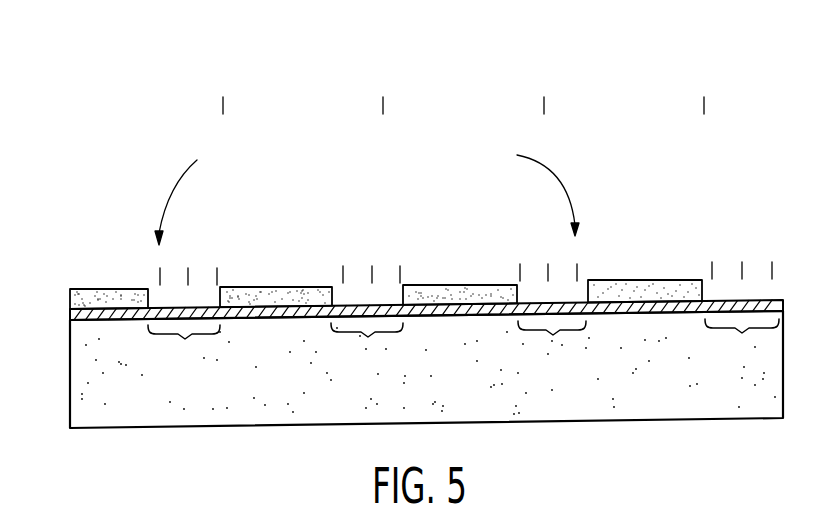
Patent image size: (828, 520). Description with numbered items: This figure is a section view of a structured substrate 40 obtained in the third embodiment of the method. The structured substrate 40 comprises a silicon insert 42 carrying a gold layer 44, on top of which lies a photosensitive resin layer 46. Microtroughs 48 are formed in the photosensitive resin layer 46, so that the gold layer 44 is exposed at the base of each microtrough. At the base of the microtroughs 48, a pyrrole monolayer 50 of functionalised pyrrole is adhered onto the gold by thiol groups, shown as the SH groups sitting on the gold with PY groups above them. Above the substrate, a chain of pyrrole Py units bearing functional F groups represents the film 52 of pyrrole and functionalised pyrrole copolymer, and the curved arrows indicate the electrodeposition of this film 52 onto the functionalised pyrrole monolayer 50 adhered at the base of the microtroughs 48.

The structured substrate 40 is at (101, 248).
The silicon insert 42 is at (105, 419).
The gold layer 44 is at (90, 316).
The photosensitive resin layer 46 is at (83, 298).
The microtroughs 48 is at (464, 326).
The pyrrole monolayer 50 is at (382, 248).
The polymer chain with F groups 52 is at (135, 103).